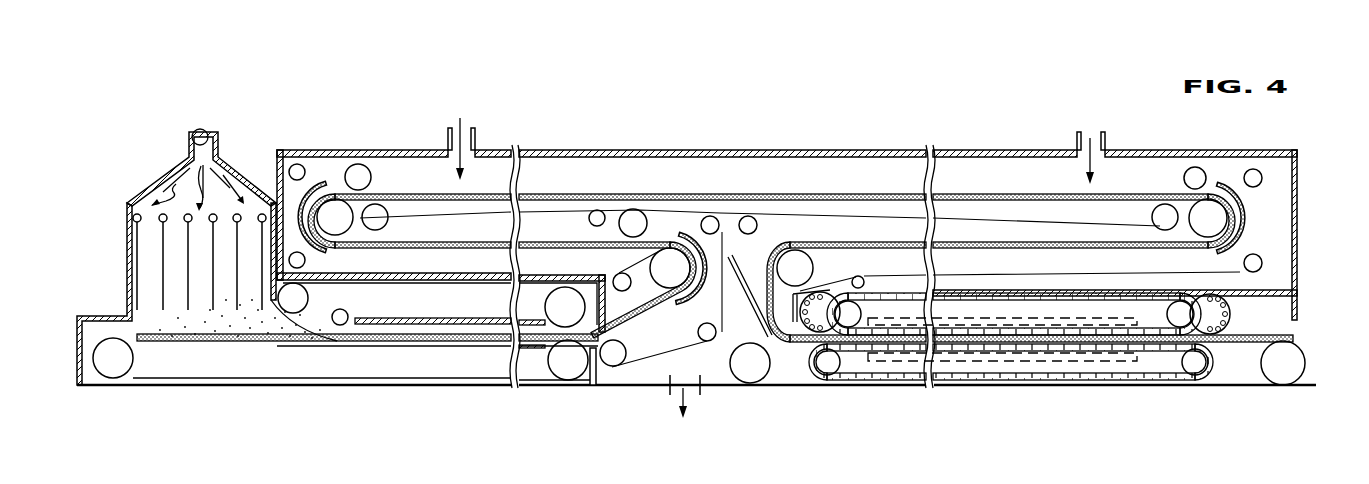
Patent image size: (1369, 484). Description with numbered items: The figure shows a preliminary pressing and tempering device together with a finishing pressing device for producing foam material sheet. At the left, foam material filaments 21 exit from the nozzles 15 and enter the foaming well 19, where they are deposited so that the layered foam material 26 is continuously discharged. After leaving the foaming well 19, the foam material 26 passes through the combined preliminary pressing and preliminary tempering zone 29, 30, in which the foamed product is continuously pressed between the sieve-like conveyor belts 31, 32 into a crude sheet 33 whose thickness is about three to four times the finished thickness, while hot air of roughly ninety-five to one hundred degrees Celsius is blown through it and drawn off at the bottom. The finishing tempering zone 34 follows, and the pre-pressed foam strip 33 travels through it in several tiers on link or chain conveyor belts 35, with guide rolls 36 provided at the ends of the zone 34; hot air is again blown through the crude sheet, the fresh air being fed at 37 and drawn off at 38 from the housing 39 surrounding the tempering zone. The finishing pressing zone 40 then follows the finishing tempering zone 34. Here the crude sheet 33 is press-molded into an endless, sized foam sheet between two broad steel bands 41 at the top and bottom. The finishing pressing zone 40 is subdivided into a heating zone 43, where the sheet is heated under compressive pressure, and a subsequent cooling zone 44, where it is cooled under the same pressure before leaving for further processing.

The nozzles 15 is at (133, 218).
The foaming well 19 is at (140, 182).
The foam material filaments 21 is at (132, 272).
The layered foam material 26 is at (223, 313).
The preliminary pressing zone 29 is at (402, 365).
The preliminary tempering zone 30 is at (365, 363).
The sieve-like conveyor belt 31 is at (330, 341).
The sieve-like conveyor belt 32 is at (455, 320).
The crude sheet 33 is at (650, 312).
The finishing tempering zone 34 is at (498, 160).
The link or chain conveyor belts 35 is at (822, 194).
The guide rolls 36 is at (340, 217).
The fresh air feed 37 is at (462, 118).
The air draw-off 38 is at (693, 396).
The housing 39 is at (752, 152).
The finishing pressing zone 40 is at (1046, 345).
The broad steel bands 41 is at (812, 382).
The heating zone 43 is at (910, 361).
The cooling zone 44 is at (1123, 361).